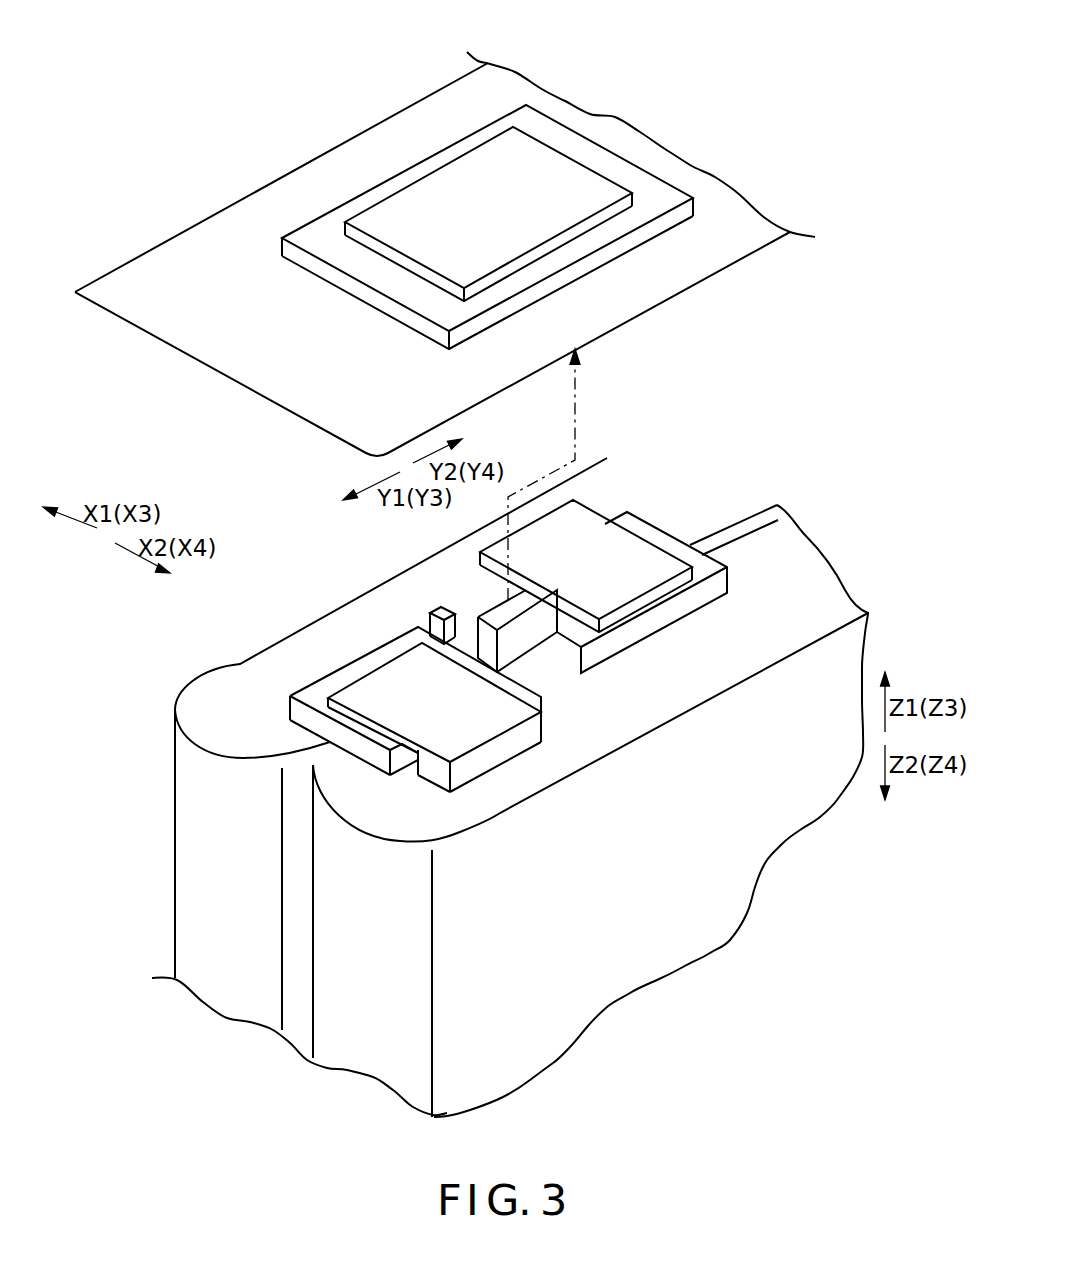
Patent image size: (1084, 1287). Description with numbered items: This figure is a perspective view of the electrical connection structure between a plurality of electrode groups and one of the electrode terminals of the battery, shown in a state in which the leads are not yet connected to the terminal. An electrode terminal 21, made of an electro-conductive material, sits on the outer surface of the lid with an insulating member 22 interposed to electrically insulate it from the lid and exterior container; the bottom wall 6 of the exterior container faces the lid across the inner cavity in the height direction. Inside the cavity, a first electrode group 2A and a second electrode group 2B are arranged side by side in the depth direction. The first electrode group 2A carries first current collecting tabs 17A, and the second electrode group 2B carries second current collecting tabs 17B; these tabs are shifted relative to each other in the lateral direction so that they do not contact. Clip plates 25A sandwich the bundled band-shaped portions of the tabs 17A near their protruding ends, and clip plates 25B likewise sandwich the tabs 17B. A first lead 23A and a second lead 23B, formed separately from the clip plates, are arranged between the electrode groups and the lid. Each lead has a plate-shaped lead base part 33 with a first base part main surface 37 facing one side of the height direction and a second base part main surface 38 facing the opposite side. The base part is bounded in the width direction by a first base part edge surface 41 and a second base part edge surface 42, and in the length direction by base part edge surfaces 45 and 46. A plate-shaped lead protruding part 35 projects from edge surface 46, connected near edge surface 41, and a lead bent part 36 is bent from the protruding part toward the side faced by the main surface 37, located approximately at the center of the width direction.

The bottom wall 6 is at (305, 185).
The electrode terminal 21 is at (448, 192).
The insulating member 22 is at (598, 237).
The first current collecting tab 17A is at (617, 511).
The second current collecting tab 17B is at (395, 703).
The first clip plate 25A is at (615, 552).
The second clip plate 25B is at (393, 677).
The first electrode group 2A is at (220, 980).
The second electrode group 2B is at (350, 1056).
The first lead 23A is at (632, 648).
The second lead 23B is at (317, 673).
The lead base part 33 is at (700, 570).
The lead protruding part 35 is at (548, 653).
The lead bent part 36 is at (530, 557).
The first base part main surface 37 is at (667, 540).
The second base part main surface 38 is at (703, 606).
The first base part edge surface 41 is at (572, 513).
The second base part edge surface 42 is at (667, 612).
The base part edge surface 45 is at (735, 537).
The base part edge surface 46 is at (581, 668).